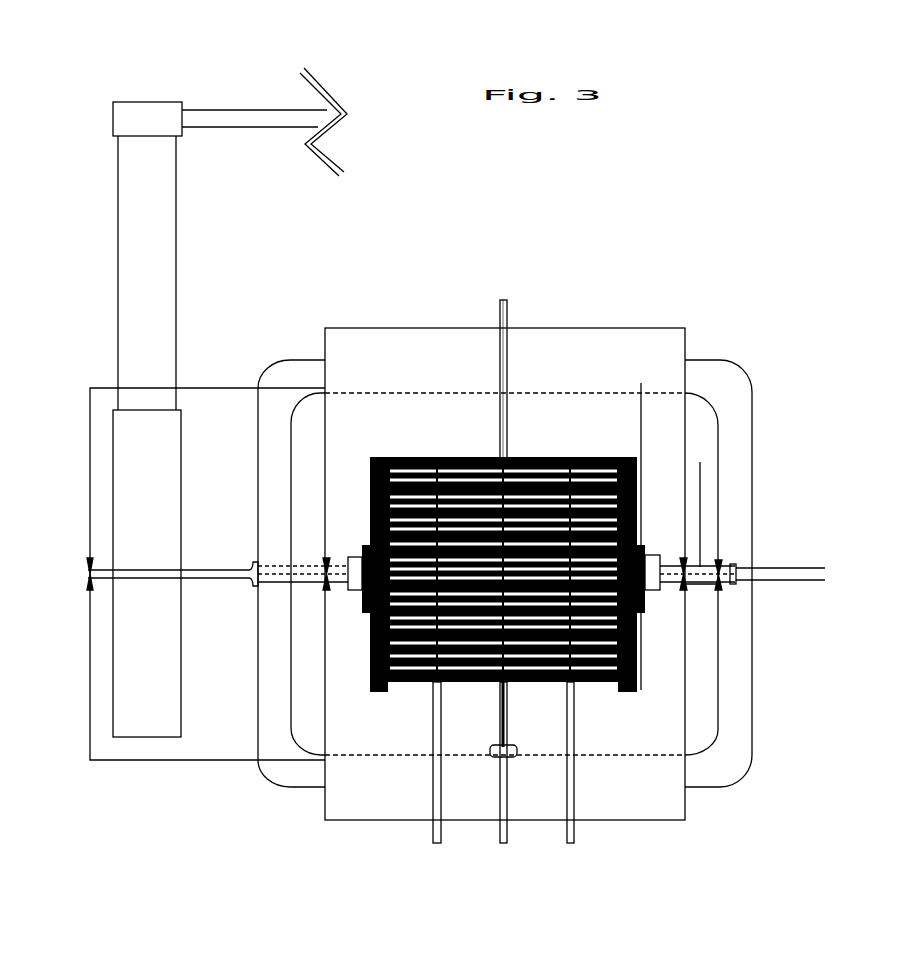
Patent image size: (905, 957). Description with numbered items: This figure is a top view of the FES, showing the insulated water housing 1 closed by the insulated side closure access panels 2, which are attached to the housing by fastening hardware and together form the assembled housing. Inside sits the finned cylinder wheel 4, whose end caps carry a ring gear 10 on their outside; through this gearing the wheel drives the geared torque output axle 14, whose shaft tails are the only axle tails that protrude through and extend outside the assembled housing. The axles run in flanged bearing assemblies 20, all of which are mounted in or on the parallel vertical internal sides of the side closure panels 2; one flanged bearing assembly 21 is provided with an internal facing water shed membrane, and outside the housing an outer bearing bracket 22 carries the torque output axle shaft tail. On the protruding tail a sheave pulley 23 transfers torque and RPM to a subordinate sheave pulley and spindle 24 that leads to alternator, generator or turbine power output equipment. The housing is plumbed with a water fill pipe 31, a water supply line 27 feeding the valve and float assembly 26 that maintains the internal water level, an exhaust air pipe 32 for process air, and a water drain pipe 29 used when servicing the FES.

The insulated water housing 1 is at (411, 362).
The insulated side closure access panels 2 is at (735, 657).
The finned cylinder wheel 4 is at (574, 458).
The ring gear 10 is at (624, 458).
The torque output axle 14 is at (790, 462).
The flanged bearing assembly 20 is at (88, 573).
The flanged bearing assembly having internal facing water shed membrane 21 is at (752, 602).
The outer bearing bracket 22 is at (207, 760).
The sheave pulley 23 is at (128, 643).
The subordinate sheave pulley and spindle 24 is at (244, 110).
The valve and float assembly 26 is at (517, 824).
The water supply line 27 is at (503, 843).
The water drain pipe 29 is at (503, 300).
The water fill pipe 31 is at (437, 843).
The exhaust air pipe 32 is at (571, 843).